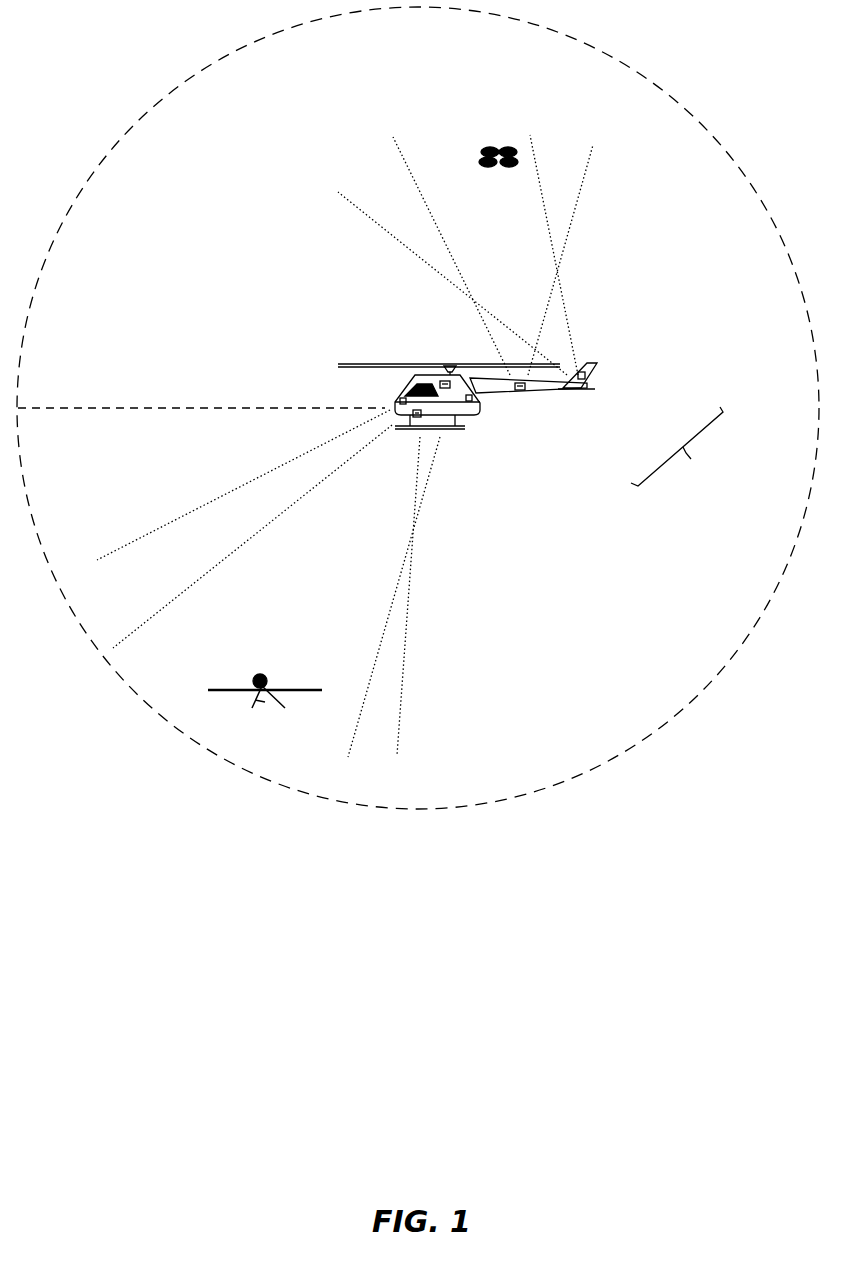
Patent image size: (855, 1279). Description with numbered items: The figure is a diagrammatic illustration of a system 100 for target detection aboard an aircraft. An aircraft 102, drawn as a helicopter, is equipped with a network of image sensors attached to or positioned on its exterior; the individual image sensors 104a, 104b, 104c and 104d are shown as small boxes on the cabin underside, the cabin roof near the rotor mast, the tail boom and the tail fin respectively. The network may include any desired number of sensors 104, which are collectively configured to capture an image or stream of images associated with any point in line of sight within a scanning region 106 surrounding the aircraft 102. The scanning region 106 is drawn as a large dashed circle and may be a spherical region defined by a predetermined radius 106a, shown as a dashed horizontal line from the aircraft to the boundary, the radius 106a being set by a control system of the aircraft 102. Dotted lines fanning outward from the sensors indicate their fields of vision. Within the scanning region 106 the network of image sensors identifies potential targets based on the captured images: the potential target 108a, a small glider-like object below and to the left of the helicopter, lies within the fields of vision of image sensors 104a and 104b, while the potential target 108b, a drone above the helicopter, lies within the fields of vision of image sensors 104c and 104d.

The system for target detection aboard an aircraft 100 is at (68, 49).
The aircraft 102 is at (481, 406).
The sensors 104 is at (677, 456).
The image sensor 104a is at (415, 420).
The image sensor 104b is at (443, 378).
The image sensor 104c is at (520, 392).
The image sensor 104d is at (596, 376).
The scanning region 106 is at (638, 748).
The predetermined radius 106a is at (134, 406).
The potential target 108a is at (242, 684).
The potential target 108b is at (475, 160).